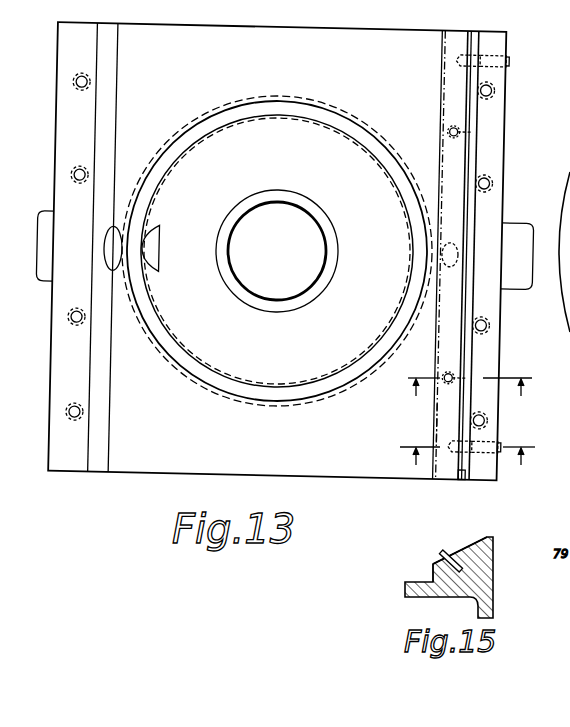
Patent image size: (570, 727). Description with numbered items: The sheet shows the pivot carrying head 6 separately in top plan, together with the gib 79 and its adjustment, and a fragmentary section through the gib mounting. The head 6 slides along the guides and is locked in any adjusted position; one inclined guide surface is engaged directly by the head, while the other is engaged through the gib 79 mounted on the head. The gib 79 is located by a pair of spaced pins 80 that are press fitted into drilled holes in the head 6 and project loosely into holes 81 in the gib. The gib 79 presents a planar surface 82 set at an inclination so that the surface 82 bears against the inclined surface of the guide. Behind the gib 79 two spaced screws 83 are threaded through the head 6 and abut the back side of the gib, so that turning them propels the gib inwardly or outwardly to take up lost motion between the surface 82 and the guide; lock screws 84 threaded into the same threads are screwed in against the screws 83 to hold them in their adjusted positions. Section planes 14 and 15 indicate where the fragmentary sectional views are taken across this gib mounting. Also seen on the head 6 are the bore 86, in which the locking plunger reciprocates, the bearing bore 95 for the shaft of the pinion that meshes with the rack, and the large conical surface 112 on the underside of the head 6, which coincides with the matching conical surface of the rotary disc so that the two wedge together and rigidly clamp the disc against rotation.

In FIG. 13, the pivot carrying head 6 is at (210, 33).
In FIG. 13, the gib 79 is at (468, 476).
In FIG. 15, the gib 79 is at (430, 567).
In FIG. 13, the pins 80 is at (457, 135).
In FIG. 15, the pins 80 is at (470, 539).
In FIG. 13, the holes 81 is at (453, 128).
In FIG. 15, the holes 81 is at (452, 548).
In FIG. 13, the planar surface 82 is at (444, 423).
In FIG. 15, the planar surface 82 is at (437, 540).
In FIG. 13, the screws 83 is at (464, 52).
In FIG. 13, the lock screws 84 is at (497, 52).
In FIG. 13, the bore 86 is at (450, 243).
In FIG. 13, the bearing bore 95 is at (110, 246).
In FIG. 13, the frustoconical surface 112 is at (143, 173).
In FIG. 13, the section plane 14— 14 is at (467, 462).
In FIG. 13, the section plane 15— 15 is at (469, 393).